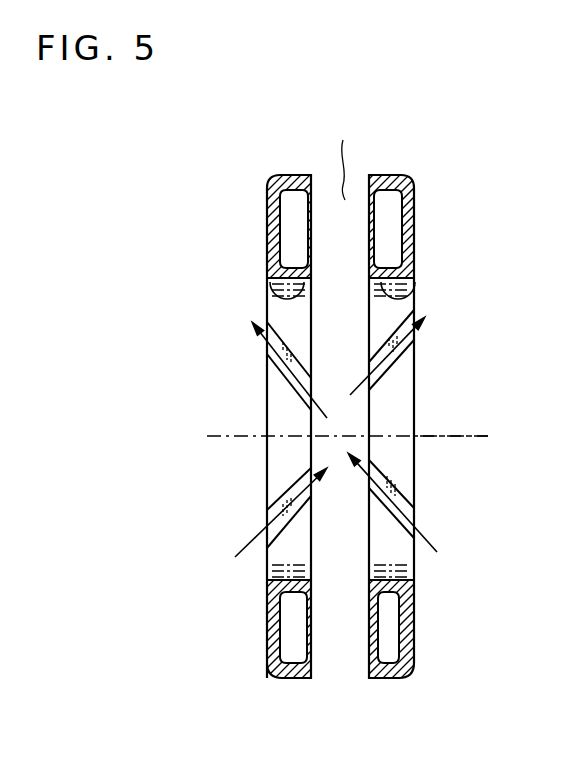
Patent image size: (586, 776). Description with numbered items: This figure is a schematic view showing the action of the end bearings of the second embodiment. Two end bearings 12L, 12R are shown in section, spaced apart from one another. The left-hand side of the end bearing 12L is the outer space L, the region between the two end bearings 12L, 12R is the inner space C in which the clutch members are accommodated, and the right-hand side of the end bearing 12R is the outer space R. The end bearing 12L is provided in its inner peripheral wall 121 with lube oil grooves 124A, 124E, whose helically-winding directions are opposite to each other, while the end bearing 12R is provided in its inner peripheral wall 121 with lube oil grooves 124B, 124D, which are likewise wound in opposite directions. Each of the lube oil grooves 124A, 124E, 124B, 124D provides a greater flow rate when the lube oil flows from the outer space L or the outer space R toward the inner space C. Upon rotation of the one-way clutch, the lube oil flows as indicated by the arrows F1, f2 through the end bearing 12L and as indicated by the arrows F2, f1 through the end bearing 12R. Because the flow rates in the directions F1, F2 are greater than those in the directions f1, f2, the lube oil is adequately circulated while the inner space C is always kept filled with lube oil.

The end bearing 12L is at (272, 184).
The end bearing 12R is at (410, 185).
The inner peripheral wall 121 is at (268, 300).
The lube oil groove 124A is at (267, 546).
The lube oil groove 124B is at (414, 341).
The lube oil groove 124D is at (414, 510).
The lube oil groove 124E is at (267, 356).
The inner space C is at (342, 157).
The outer space L is at (336, 433).
The outer space R is at (465, 439).
The arrow f1 is at (403, 345).
The arrow f2 is at (275, 359).
The arrow F1 is at (267, 520).
The arrow F2 is at (407, 513).